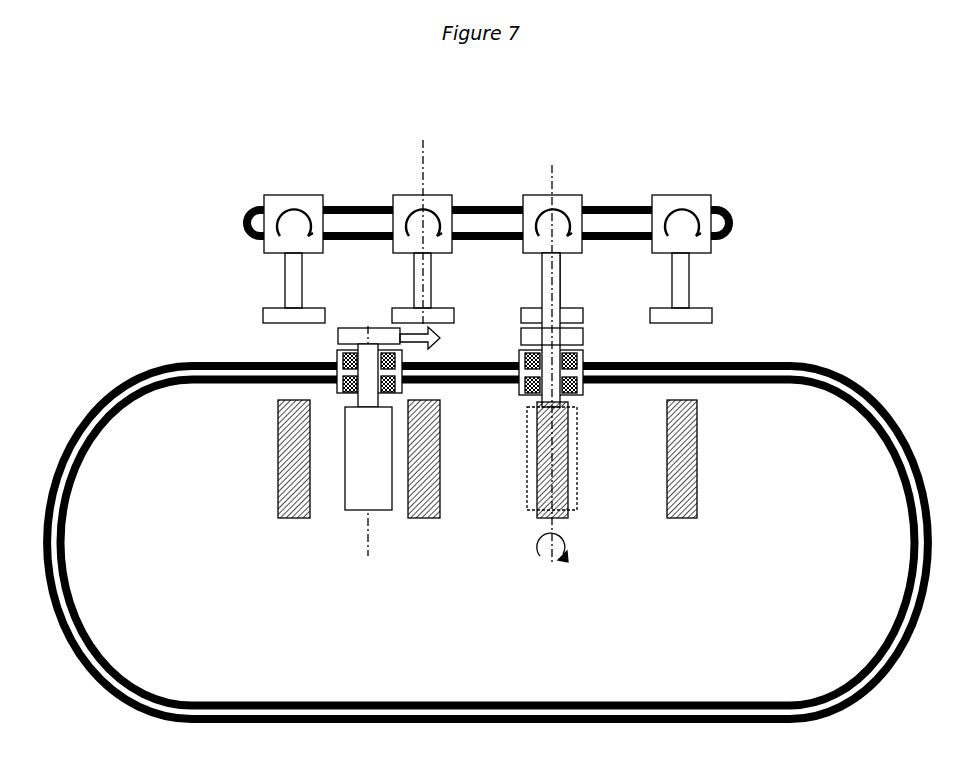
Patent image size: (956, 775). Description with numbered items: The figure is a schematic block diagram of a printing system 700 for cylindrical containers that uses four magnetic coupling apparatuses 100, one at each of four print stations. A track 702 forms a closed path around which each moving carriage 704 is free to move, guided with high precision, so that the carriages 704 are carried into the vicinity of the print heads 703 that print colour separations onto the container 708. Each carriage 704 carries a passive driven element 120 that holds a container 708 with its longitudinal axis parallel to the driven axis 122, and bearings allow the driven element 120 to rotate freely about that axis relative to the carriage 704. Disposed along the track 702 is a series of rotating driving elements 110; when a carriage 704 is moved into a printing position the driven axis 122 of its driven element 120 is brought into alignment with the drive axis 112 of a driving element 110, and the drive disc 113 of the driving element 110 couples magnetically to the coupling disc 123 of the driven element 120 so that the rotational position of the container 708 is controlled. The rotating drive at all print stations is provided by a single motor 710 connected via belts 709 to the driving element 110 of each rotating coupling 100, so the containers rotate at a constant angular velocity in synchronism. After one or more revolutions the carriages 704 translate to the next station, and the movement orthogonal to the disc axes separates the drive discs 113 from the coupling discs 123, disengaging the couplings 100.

The printing system 700 is at (84, 254).
The track 702 is at (76, 442).
The print head 703 is at (288, 520).
The moving carriage 704 is at (338, 370).
The container 708 is at (345, 512).
The belt 709 is at (350, 206).
The motor 710 is at (290, 194).
The driving element 110 is at (278, 282).
The drive axis 112 is at (423, 166).
The drive disc 113 is at (262, 317).
The passive driven element 120 is at (361, 325).
The driven axis 122 is at (368, 544).
The coupling disc 123 is at (520, 336).
The magnetic coupling apparatus 100 is at (586, 322).